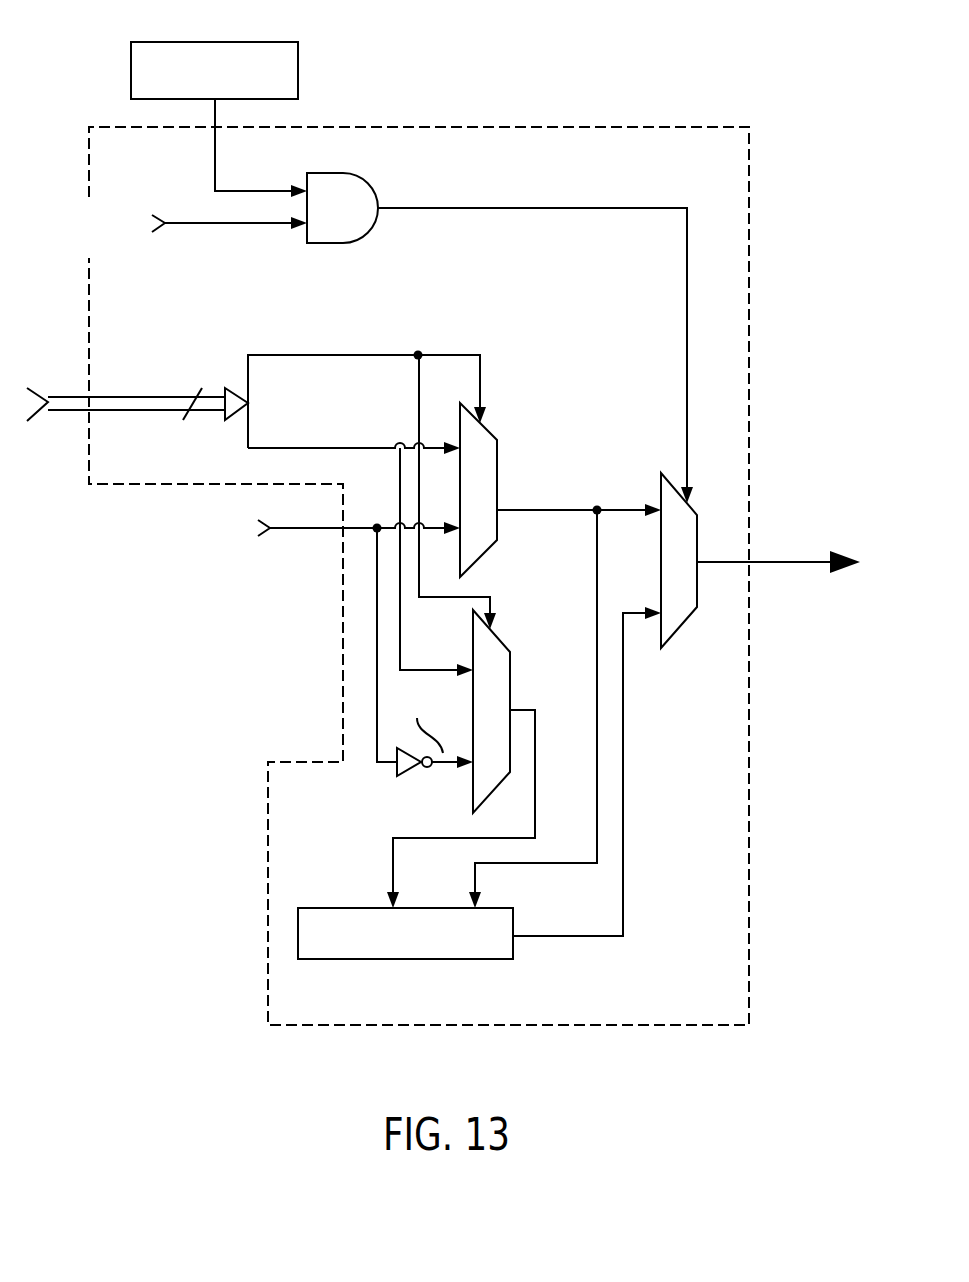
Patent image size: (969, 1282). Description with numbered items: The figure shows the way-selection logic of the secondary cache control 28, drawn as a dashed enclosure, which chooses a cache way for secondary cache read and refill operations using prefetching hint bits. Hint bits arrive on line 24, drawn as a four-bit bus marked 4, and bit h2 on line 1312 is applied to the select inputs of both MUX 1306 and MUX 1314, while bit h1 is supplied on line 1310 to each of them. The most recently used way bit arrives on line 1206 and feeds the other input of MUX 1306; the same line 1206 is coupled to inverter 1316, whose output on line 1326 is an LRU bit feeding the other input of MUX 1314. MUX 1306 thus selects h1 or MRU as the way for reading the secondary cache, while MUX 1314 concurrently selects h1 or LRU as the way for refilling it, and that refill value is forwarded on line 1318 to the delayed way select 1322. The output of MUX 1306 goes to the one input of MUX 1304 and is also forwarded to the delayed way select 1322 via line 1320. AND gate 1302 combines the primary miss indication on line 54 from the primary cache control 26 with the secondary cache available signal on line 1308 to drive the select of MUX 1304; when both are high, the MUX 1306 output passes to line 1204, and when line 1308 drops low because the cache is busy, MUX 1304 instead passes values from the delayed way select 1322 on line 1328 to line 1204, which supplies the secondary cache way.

The primary cache control 26 is at (233, 42).
The secondary cache control 28 is at (749, 178).
The primary miss line 54 is at (230, 191).
The line 24 is at (127, 397).
The bus width 4 is at (189, 415).
The AND gate 1302 is at (357, 175).
The MUX 1304 is at (694, 507).
The MUX 1306 is at (497, 478).
The line 1308 is at (213, 223).
The line 1310 is at (348, 448).
The line 1312 is at (392, 354).
The MUX 1314 is at (510, 672).
The inverter 1316 is at (397, 776).
The line 1318 is at (535, 798).
The line 1320 is at (598, 600).
The delayed way select 1322 is at (462, 959).
The line 1326 is at (428, 768).
The line 1328 is at (623, 902).
The line 1204 is at (800, 558).
The line 1206 is at (318, 529).